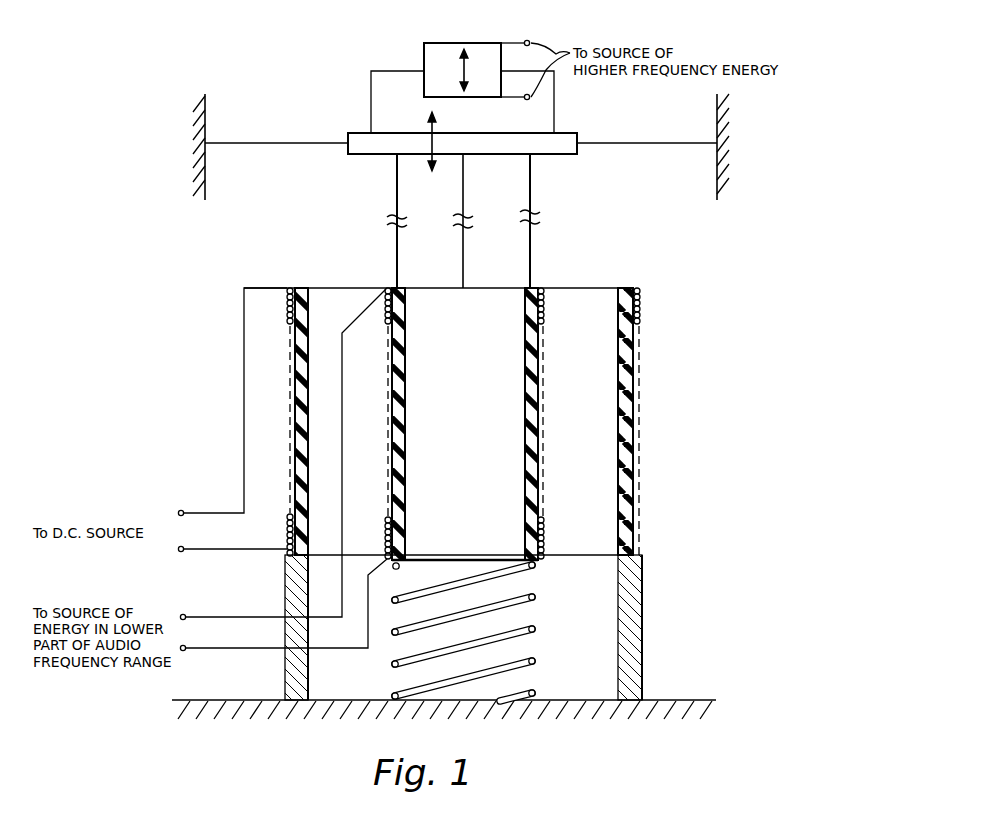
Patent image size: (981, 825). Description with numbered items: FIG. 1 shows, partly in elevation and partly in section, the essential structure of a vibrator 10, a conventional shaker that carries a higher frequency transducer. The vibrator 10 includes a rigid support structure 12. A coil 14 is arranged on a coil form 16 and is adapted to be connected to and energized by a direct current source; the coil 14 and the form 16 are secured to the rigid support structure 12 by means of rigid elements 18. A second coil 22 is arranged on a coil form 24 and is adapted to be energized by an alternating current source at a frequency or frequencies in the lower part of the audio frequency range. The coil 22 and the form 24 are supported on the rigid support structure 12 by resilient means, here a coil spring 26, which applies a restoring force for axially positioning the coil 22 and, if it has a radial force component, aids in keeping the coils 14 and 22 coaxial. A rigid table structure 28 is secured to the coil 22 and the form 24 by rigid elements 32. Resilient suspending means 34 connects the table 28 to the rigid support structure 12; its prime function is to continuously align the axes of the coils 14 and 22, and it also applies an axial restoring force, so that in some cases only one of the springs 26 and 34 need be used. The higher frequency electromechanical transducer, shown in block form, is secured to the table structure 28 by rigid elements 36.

The vibrator 10 is at (652, 409).
The rigid support structure 12 is at (714, 169).
The coil 14 is at (288, 288).
The coil form 16 is at (298, 288).
The rigid elements 18 is at (644, 627).
The second coil 22 is at (385, 288).
The coil form 24 is at (399, 288).
The coil spring 26 is at (536, 634).
The rigid table structure 28 is at (559, 155).
The rigid elements 32 is at (532, 233).
The resilient suspending means 34 is at (472, 43).
The rigid elements 36 is at (556, 110).